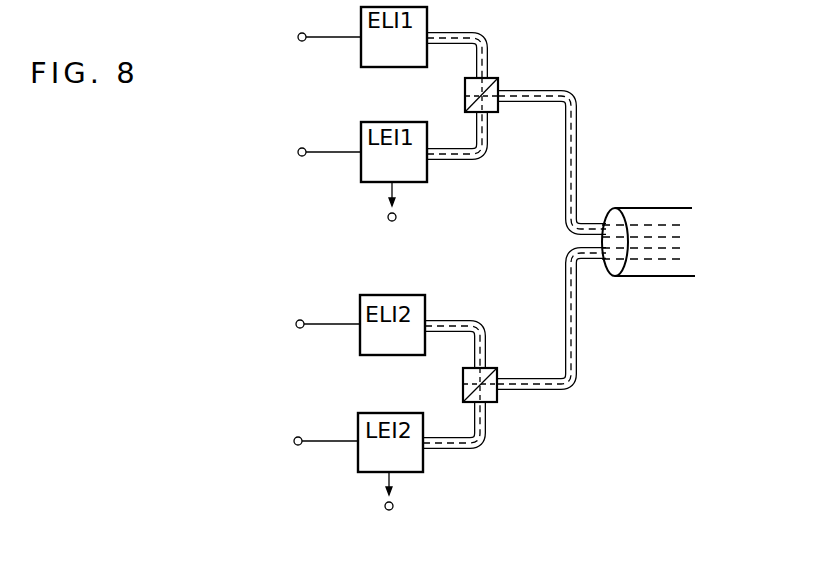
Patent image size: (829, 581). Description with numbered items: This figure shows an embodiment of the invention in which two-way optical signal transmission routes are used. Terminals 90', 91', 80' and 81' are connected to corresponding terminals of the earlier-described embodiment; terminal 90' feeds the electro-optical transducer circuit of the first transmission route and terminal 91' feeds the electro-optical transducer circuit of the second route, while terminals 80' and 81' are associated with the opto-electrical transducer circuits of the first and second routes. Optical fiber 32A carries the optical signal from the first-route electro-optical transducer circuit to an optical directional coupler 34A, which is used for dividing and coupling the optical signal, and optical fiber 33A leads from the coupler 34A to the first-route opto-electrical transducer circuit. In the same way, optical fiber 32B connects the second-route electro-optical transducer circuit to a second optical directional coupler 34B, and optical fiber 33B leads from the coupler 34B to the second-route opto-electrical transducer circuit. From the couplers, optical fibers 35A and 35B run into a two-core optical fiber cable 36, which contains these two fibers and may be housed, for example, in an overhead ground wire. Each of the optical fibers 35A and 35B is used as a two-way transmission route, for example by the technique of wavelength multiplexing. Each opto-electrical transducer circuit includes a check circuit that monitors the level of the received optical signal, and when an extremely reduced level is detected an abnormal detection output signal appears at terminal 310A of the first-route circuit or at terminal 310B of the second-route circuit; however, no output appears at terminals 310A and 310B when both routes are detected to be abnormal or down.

The terminal 90' is at (306, 36).
The terminal 80' is at (306, 151).
The terminal 91' is at (308, 321).
The terminal 81' is at (306, 441).
The optical fiber 32A is at (458, 32).
The optical fiber 33A is at (458, 161).
The optical fiber 32B is at (455, 320).
The optical fiber 33B is at (458, 449).
The optical directional coupler 34A is at (453, 95).
The optical directional coupler 34B is at (451, 385).
The optical fiber 35A is at (578, 138).
The optical fiber 35B is at (578, 347).
The two-core optical fiber cable 36 is at (667, 208).
The terminal 310A is at (400, 217).
The terminal 310B is at (395, 507).